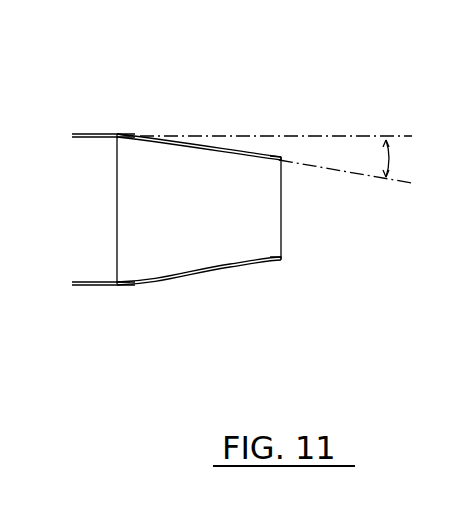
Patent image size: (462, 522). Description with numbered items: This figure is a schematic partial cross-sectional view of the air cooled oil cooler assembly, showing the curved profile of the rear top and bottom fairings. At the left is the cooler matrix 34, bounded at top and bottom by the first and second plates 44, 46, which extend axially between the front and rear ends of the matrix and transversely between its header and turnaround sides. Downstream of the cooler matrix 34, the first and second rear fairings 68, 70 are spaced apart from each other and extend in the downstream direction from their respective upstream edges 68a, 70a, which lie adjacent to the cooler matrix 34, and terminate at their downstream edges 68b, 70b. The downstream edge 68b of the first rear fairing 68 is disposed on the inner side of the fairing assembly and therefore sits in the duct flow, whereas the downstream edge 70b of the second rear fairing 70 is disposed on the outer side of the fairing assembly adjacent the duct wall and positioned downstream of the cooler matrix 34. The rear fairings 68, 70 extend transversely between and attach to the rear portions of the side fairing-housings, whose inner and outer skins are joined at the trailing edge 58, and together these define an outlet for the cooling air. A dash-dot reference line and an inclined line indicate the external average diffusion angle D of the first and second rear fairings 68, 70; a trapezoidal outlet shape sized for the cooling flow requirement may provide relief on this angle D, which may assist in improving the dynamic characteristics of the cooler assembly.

The cooler matrix 34 is at (82, 142).
The first plate 44 is at (105, 134).
The second plate 46 is at (92, 286).
The trailing edge 58 is at (283, 208).
The first rear fairing 68 is at (138, 135).
The upstream edge 68a is at (118, 134).
The downstream edge 68b is at (285, 157).
The second rear fairing 70 is at (211, 274).
The upstream edge 70a is at (120, 286).
The downstream edge 70b is at (283, 258).
The external average diffusion angle D is at (397, 158).